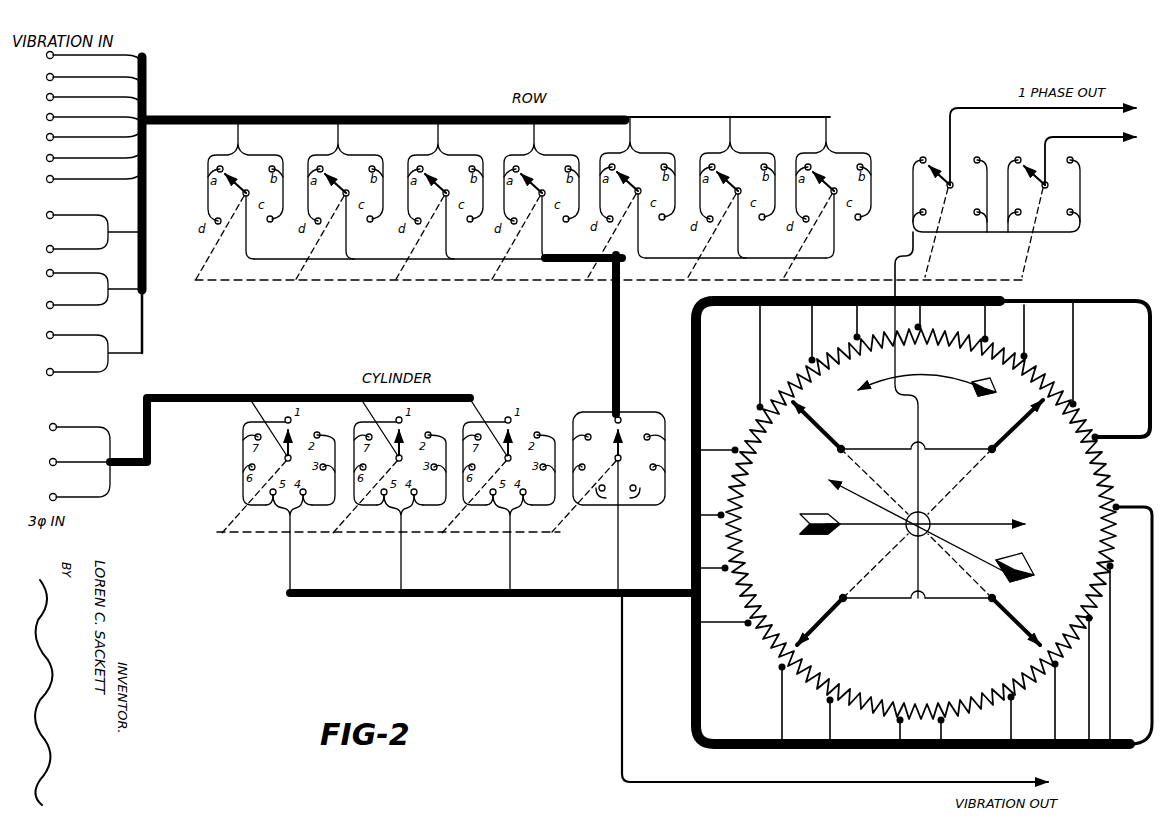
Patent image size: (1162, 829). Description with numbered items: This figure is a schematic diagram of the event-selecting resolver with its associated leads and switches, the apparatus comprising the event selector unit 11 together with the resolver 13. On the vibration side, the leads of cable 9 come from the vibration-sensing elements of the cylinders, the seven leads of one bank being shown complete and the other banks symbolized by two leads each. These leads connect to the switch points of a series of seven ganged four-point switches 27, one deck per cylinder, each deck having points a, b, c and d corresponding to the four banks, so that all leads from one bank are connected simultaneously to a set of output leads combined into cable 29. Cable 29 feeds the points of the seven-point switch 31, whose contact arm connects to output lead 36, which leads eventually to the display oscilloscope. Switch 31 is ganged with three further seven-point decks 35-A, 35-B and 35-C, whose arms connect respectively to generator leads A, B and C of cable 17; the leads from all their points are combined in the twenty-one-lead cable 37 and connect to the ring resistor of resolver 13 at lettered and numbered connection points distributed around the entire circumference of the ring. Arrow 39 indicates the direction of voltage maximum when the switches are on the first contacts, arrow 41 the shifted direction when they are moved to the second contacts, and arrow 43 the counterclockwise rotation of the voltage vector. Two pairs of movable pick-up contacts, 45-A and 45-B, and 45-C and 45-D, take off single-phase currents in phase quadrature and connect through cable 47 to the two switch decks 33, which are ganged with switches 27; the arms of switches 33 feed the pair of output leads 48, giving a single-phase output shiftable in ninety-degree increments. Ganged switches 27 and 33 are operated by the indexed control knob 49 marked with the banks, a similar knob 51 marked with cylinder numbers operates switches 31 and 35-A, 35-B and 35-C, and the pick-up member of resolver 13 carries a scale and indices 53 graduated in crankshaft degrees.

The cable 9 is at (198, 116).
The event selector unit 11 is at (181, 214).
The resolver 13 is at (924, 522).
The cable 17 is at (128, 470).
The ganged four-point switches 27 is at (690, 92).
The cable 29 is at (604, 350).
The seven-point switch 31 is at (592, 410).
The four-point switch decks 33 is at (950, 238).
The switch 35-A is at (250, 466).
The switch 35-B is at (374, 494).
The switch 35-C is at (486, 492).
The output lead 36 is at (620, 684).
The 21-lead cable 37 is at (586, 590).
The arrow 39 is at (872, 528).
The arrow 41 is at (974, 556).
The arrow 43 is at (942, 386).
The movable contact 45-A is at (1008, 612).
The movable contact 45-B is at (808, 414).
The movable contact 45-C is at (830, 596).
The movable contact 45-D is at (1024, 420).
The cable 47 is at (896, 266).
The output leads 48 is at (1070, 106).
The indexed control knob 49 is at (300, 285).
The control knob 51 is at (284, 540).
The scale and indices 53 is at (932, 518).